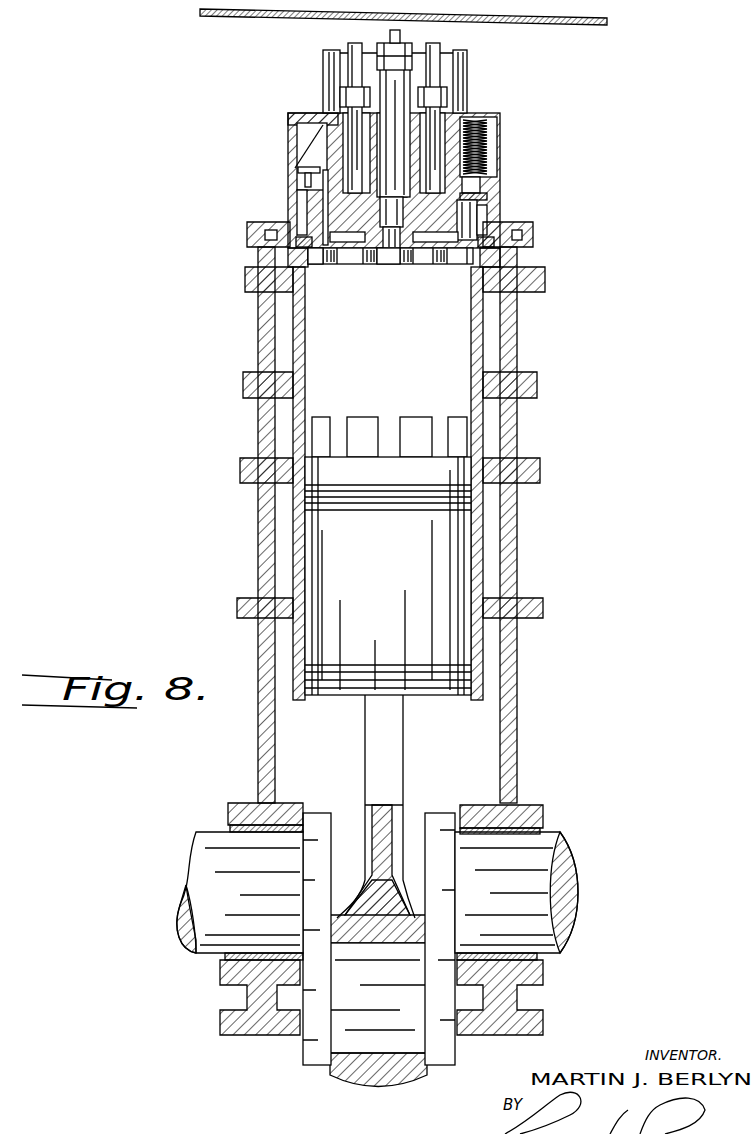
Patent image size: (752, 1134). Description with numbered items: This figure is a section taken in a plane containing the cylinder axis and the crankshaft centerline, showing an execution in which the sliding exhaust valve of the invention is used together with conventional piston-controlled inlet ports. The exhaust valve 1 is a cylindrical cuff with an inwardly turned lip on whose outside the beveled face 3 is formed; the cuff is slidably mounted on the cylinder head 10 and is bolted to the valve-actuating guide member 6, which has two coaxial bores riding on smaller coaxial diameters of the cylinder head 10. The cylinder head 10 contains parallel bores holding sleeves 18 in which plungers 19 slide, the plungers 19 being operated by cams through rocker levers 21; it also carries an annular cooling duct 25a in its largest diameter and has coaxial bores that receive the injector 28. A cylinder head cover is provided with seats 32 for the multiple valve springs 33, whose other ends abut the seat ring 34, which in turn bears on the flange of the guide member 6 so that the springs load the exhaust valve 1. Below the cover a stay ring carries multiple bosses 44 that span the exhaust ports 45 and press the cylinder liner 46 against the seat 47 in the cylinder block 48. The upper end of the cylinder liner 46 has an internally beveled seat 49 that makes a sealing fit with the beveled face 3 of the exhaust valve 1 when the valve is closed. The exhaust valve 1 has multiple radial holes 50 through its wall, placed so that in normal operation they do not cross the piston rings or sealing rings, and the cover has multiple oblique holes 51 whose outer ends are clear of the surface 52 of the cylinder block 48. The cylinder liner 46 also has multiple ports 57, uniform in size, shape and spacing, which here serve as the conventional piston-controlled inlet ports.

The exhaust valve 1 is at (303, 215).
The beveled face 3 is at (480, 270).
The valve-actuating guide member 6 is at (327, 152).
The cylinder head 10 is at (291, 126).
The sleeves 18 is at (323, 143).
The plungers 19 is at (355, 117).
The rocker levers 21 is at (353, 48).
The annular cooling duct 25a is at (443, 237).
The injector 28 is at (400, 78).
The seats 32 is at (497, 133).
The valve springs 33 is at (495, 153).
The seat ring 34 is at (497, 178).
The bosses 44 is at (415, 262).
The exhaust ports 45 is at (372, 262).
The cylinder liner 46 is at (500, 313).
The seat 47 is at (320, 267).
The cylinder block 48 is at (540, 293).
The internally beveled seat 49 is at (318, 265).
The holes 50 is at (498, 220).
The oblique holes 51 is at (493, 215).
The surface 52 is at (530, 227).
The ports 57 is at (368, 420).